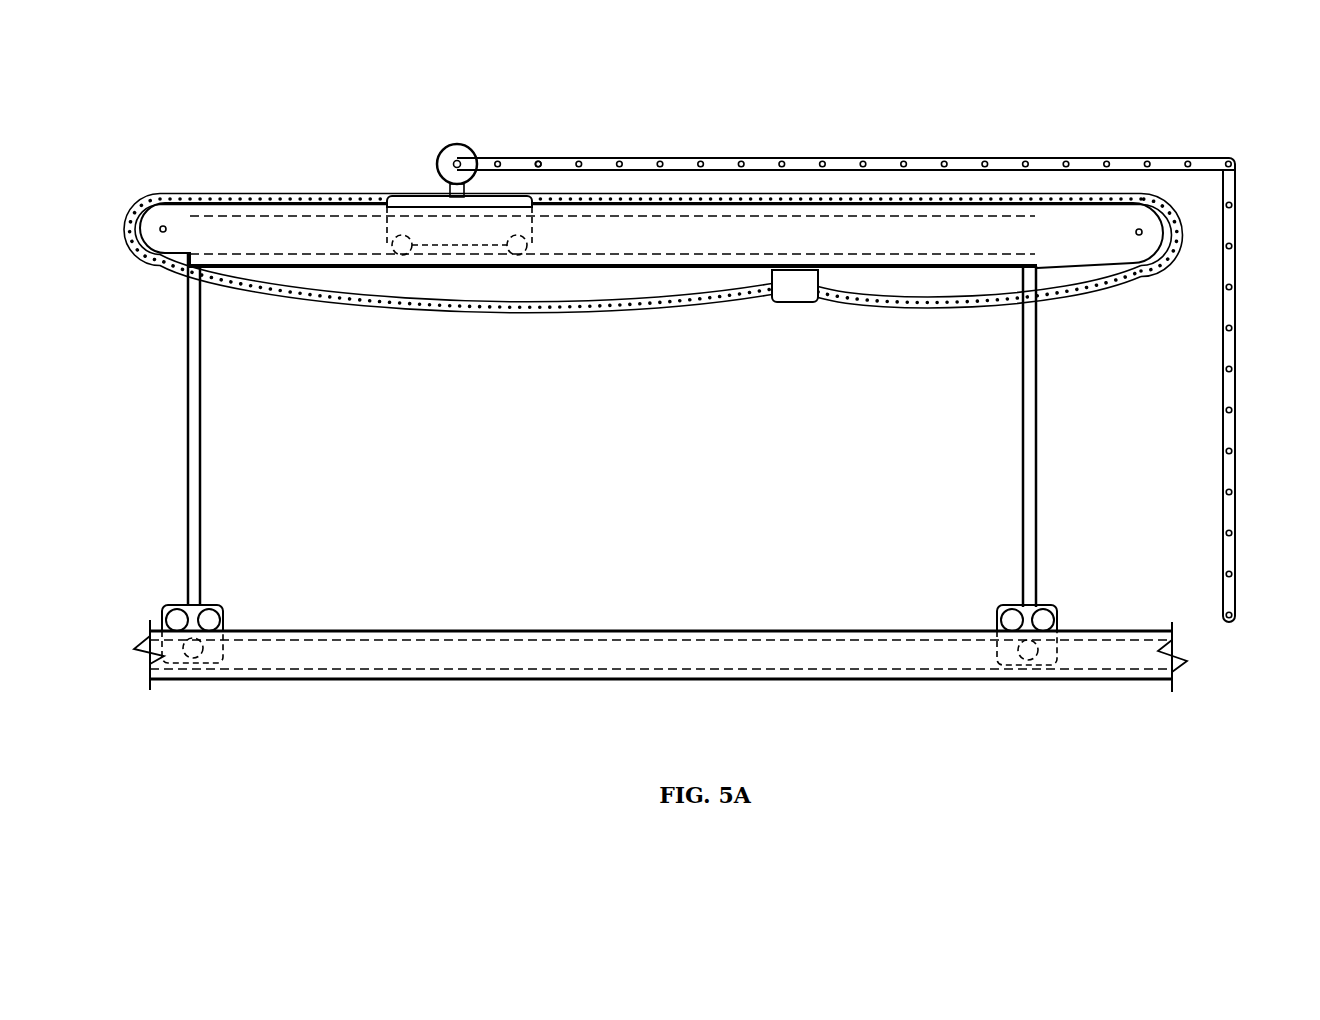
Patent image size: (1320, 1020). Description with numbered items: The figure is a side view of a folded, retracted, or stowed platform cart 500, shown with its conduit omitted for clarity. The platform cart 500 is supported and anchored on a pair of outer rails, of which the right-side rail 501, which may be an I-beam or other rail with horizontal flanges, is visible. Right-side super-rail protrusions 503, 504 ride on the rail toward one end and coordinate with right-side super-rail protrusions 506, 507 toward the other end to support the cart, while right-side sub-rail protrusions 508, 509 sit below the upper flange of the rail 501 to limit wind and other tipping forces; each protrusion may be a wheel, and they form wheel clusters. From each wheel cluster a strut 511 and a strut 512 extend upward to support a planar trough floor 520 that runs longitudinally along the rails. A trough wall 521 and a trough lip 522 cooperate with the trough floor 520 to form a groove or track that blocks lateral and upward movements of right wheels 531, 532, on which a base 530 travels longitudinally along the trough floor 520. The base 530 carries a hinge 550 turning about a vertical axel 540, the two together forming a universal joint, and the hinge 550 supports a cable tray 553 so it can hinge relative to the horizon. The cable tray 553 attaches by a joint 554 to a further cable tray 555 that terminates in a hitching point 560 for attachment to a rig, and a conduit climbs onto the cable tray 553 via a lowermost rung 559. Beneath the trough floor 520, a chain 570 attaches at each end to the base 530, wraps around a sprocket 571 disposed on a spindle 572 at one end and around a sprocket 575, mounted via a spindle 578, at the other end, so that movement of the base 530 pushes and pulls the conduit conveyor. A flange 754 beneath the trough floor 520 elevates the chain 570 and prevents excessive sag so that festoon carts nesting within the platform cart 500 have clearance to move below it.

The platform cart 500 is at (232, 97).
The right-side rail 501 is at (662, 680).
The right-side super-rail protrusion 503 is at (163, 615).
The right-side super-rail protrusion 504 is at (223, 618).
The right-side super-rail protrusion 506 is at (997, 618).
The right-side super-rail protrusion 507 is at (1057, 618).
The right-side sub-rail protrusion 508 is at (190, 666).
The right-side sub-rail protrusion 509 is at (1028, 665).
The strut 511 is at (188, 434).
The strut 512 is at (1037, 440).
The trough floor 520 is at (873, 263).
The trough wall 521 is at (632, 250).
The trough lip 522 is at (917, 214).
The base 530 is at (405, 196).
The right wheel 531 is at (402, 255).
The right wheel 532 is at (517, 255).
The vertical axel 540 is at (470, 146).
The hinge 550 is at (444, 150).
The cable tray 553 is at (845, 158).
The joint 554 is at (1232, 158).
The cable tray 555 is at (1236, 308).
The lowermost rung 559 is at (540, 158).
The hitching point 560 is at (1229, 624).
The chain 570 is at (1067, 298).
The sprocket 571 is at (1138, 268).
The spindle 572 is at (1139, 229).
The sprocket 575 is at (165, 192).
The spindle 578 is at (161, 231).
The flange 754 is at (795, 302).